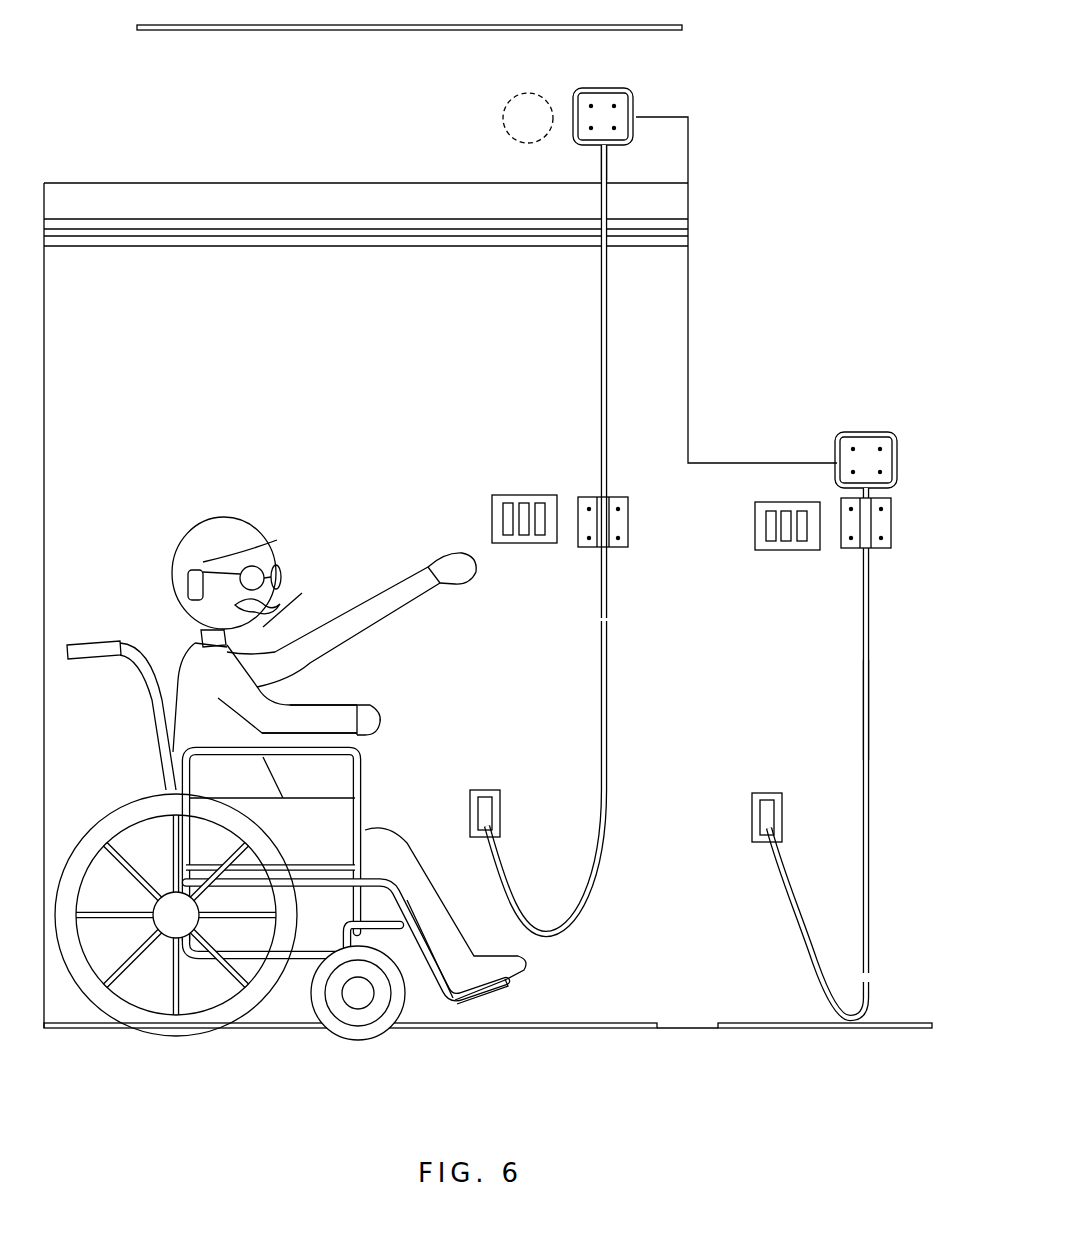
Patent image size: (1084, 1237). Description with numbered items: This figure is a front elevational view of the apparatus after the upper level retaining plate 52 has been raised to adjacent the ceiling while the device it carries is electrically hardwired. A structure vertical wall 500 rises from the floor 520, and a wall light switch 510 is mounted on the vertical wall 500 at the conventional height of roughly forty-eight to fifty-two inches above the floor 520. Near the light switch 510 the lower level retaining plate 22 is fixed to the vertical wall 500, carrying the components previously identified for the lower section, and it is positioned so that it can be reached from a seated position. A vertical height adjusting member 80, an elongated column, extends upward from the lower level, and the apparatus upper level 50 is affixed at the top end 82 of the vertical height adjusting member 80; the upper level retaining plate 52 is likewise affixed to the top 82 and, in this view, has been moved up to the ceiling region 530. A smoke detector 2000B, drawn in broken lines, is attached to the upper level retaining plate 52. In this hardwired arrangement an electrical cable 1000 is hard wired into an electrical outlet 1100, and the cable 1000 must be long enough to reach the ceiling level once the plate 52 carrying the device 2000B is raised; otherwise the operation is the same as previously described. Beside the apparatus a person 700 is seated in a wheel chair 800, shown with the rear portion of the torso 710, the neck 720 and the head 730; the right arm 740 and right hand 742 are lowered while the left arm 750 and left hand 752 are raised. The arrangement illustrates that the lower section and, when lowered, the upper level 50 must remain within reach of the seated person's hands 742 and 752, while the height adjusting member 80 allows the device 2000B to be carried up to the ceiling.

The lower level retaining plate 22 is at (630, 541).
The apparatus upper level 50 is at (883, 449).
The upper level retaining plate 52 is at (616, 105).
The vertical height adjusting member 80 is at (609, 322).
The top end 82 is at (600, 166).
The vertical wall 500 is at (849, 701).
The wall light switch 510 is at (506, 543).
The floor 520 is at (611, 1021).
The ceiling 530 is at (355, 32).
The person 700 is at (309, 701).
The torso 710 is at (187, 652).
The neck 720 is at (227, 634).
The head 730 is at (201, 522).
The right arm 740 is at (283, 720).
The right hand 742 is at (365, 730).
The left arm 750 is at (378, 600).
The left hand 752 is at (455, 558).
The wheel chair 800 is at (163, 787).
The electrical cable 1000 is at (607, 795).
The electrical outlet 1100 is at (486, 788).
The smoke detector 2000B is at (528, 92).